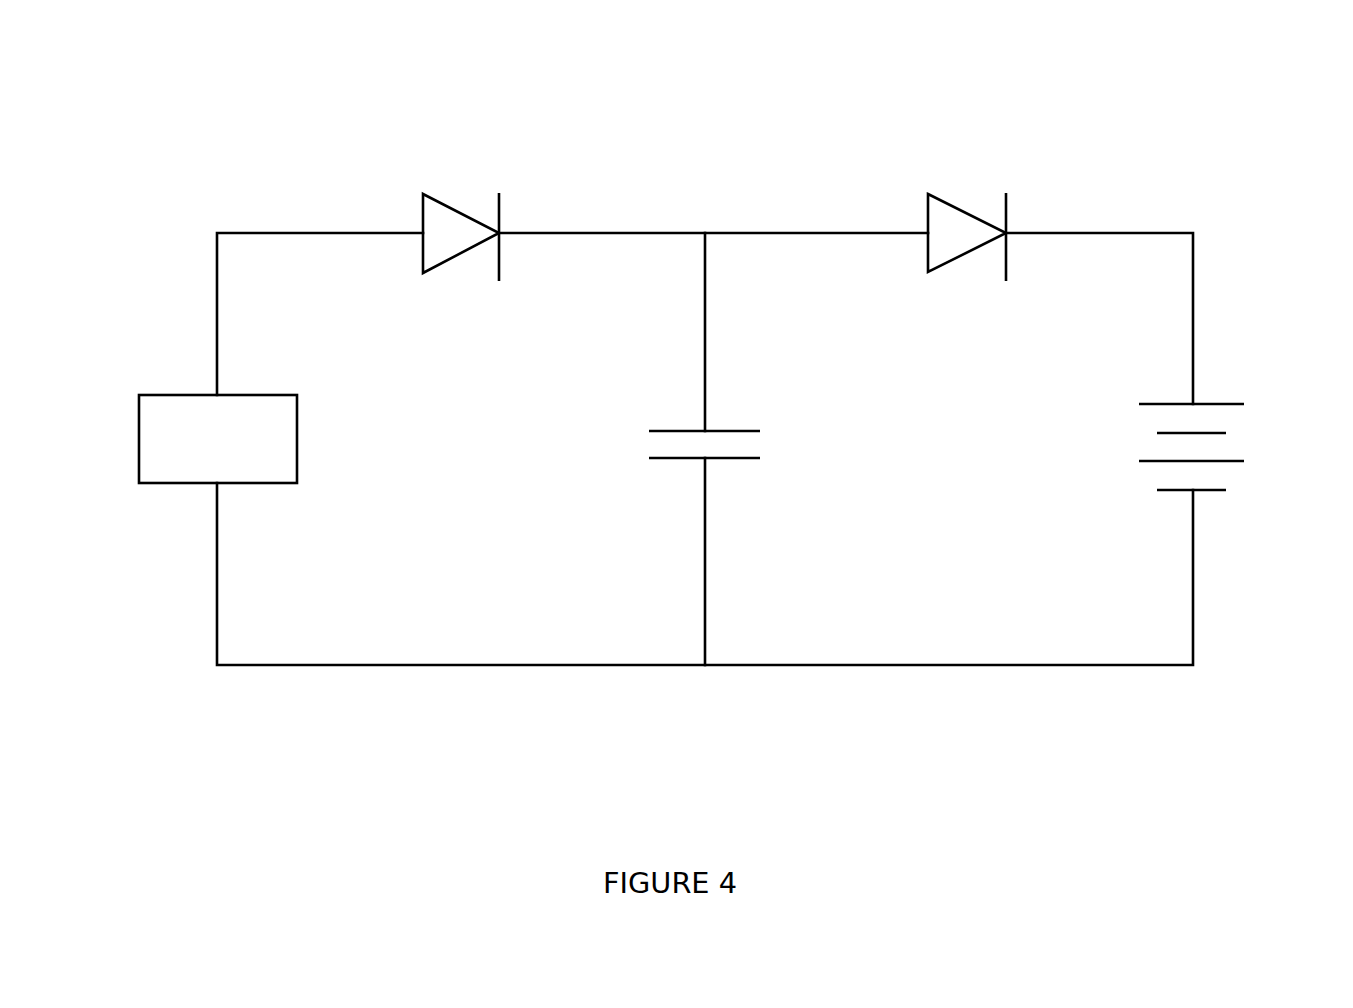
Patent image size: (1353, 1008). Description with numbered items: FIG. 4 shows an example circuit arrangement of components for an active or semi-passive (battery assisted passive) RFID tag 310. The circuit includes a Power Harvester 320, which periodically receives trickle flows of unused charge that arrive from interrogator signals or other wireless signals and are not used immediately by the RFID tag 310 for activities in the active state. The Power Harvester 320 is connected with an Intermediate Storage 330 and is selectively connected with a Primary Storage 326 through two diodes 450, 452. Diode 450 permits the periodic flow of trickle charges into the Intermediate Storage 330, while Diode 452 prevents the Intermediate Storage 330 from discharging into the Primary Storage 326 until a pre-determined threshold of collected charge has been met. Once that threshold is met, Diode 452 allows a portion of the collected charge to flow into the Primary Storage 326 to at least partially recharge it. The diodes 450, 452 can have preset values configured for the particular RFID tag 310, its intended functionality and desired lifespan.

The RFID tag 310 is at (337, 124).
The power harvester 320 is at (185, 483).
The primary storage 326 is at (1192, 404).
The intermediate storage 330 is at (705, 430).
The diode 450 is at (438, 200).
The diode 452 is at (946, 200).